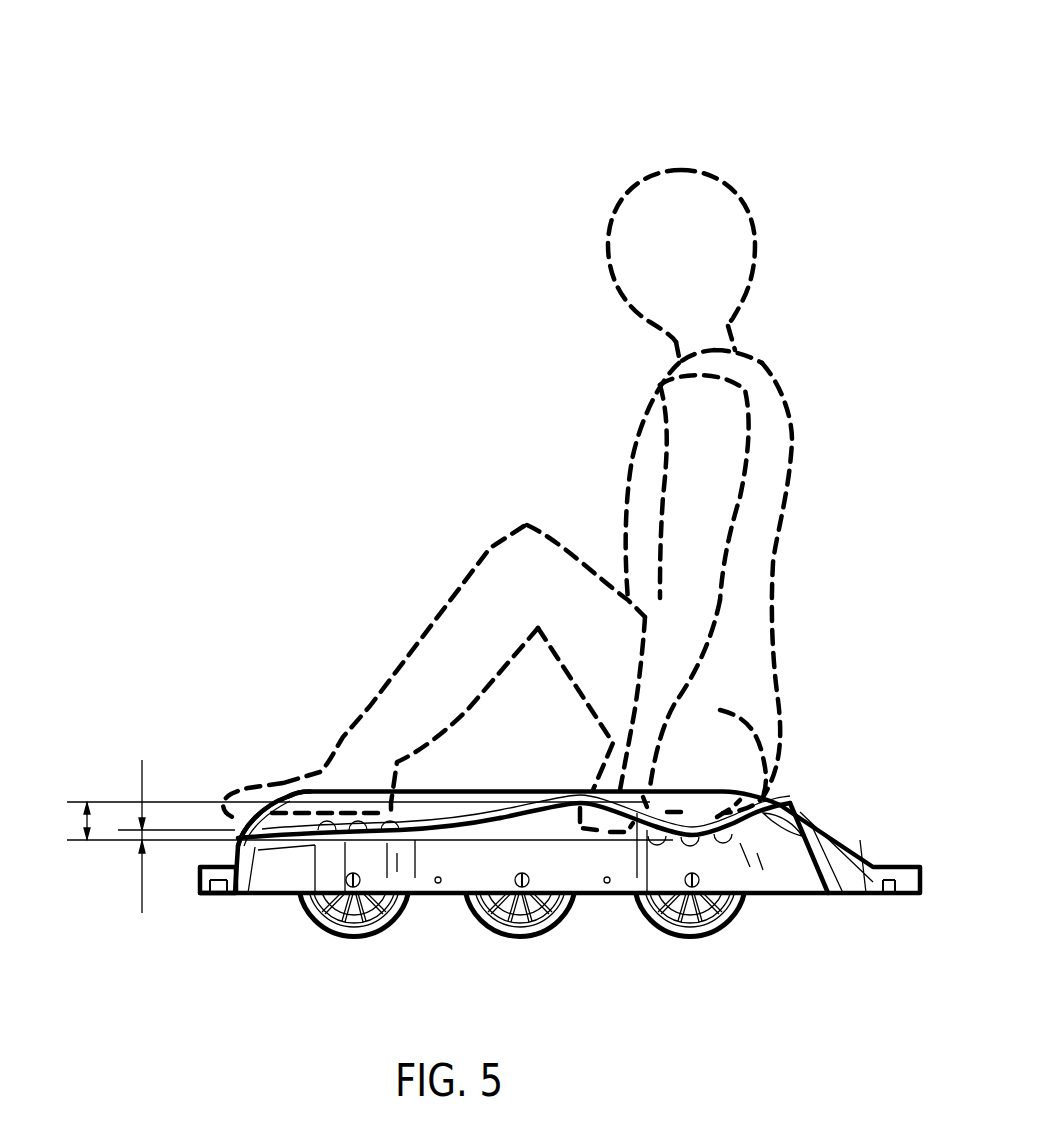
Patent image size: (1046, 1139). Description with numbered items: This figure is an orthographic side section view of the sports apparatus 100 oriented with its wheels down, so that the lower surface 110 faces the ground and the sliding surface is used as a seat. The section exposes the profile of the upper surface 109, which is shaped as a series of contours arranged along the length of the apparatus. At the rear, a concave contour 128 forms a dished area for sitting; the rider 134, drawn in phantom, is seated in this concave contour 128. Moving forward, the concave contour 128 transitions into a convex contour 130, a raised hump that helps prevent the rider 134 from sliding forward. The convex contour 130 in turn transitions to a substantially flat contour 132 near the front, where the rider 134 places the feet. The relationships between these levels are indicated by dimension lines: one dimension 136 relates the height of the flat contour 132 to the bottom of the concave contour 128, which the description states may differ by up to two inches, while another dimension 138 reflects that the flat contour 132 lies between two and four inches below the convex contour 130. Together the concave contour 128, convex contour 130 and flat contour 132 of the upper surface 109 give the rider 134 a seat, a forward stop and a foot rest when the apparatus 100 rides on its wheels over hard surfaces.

The personal mobility vehicle system 100 is at (118, 52).
The lower surface 110 is at (212, 945).
The upper surface 109 is at (243, 768).
The flat contour 132 is at (298, 823).
The convex contour 130 is at (567, 788).
The concave contour 128 is at (702, 818).
The rider 134 is at (802, 322).
The deck height dimension 136 is at (142, 790).
The recess depth dimension 138 is at (85, 823).